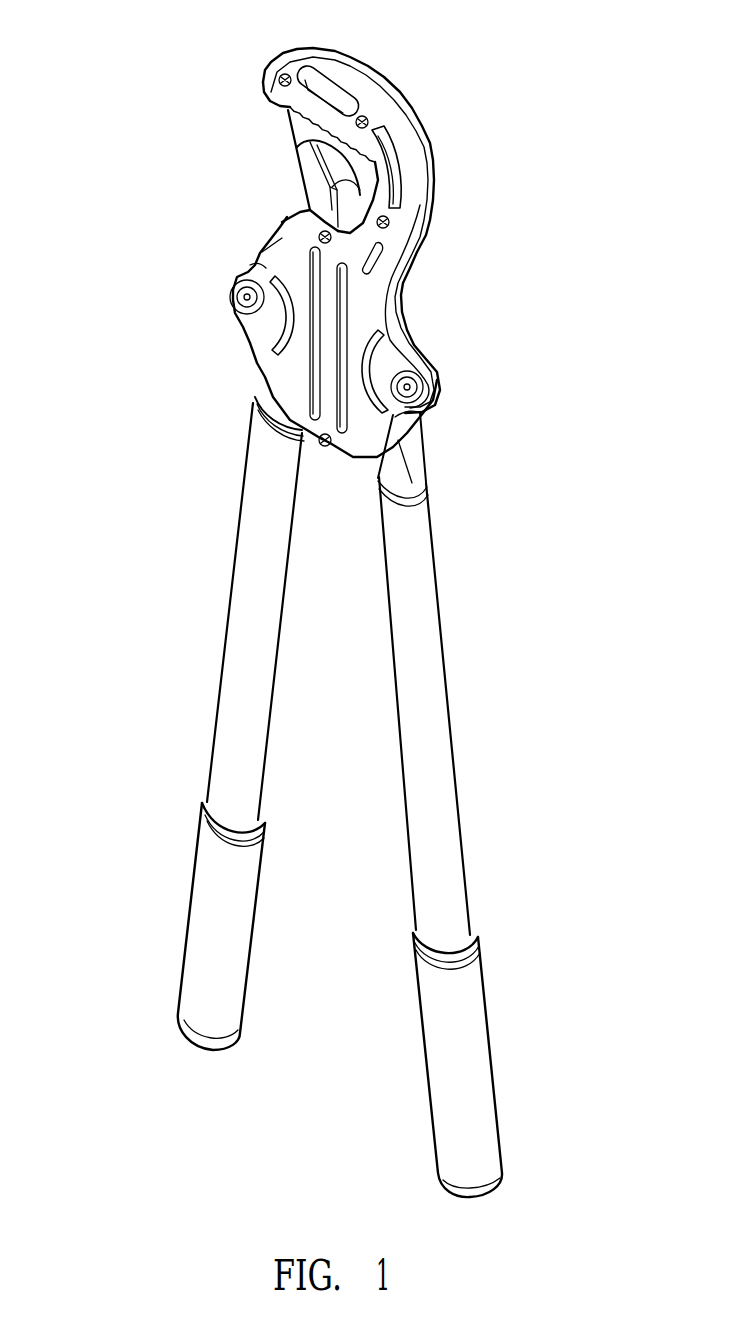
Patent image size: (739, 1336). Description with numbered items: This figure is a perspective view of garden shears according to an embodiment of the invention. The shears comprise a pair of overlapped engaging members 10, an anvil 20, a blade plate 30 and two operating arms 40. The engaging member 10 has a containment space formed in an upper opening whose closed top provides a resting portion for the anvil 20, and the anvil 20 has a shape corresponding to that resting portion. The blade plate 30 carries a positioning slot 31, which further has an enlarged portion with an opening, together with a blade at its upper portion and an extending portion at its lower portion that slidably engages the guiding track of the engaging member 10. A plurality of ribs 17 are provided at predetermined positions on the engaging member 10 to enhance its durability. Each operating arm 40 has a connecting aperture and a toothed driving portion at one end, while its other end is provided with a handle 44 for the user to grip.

The engaging member 10 is at (412, 272).
The ribs 17 is at (395, 182).
The anvil 20 is at (382, 97).
The blade plate 30 is at (285, 122).
The positioning slot 31 is at (313, 203).
The operating arm 40 is at (417, 463).
The handle 44 is at (233, 673).